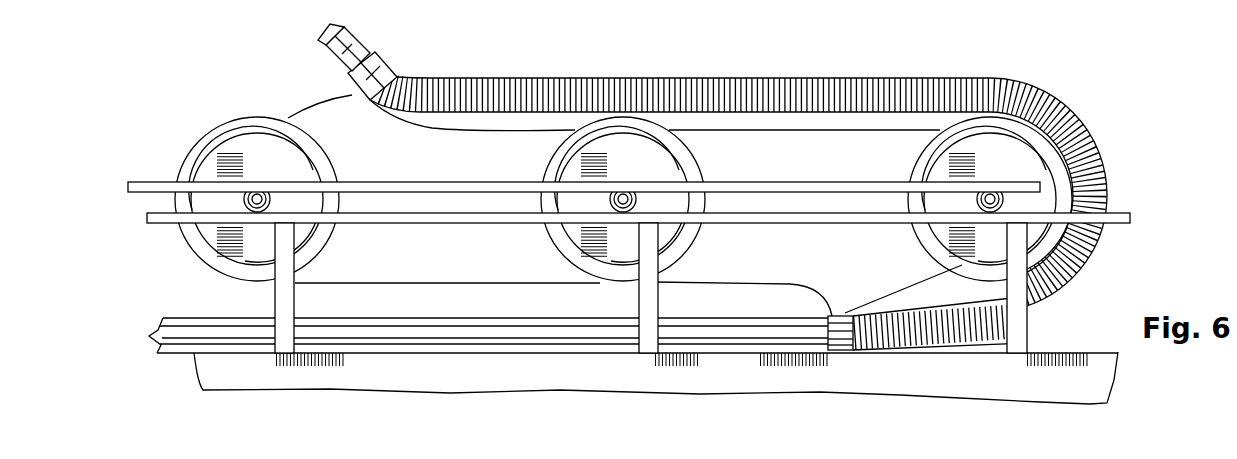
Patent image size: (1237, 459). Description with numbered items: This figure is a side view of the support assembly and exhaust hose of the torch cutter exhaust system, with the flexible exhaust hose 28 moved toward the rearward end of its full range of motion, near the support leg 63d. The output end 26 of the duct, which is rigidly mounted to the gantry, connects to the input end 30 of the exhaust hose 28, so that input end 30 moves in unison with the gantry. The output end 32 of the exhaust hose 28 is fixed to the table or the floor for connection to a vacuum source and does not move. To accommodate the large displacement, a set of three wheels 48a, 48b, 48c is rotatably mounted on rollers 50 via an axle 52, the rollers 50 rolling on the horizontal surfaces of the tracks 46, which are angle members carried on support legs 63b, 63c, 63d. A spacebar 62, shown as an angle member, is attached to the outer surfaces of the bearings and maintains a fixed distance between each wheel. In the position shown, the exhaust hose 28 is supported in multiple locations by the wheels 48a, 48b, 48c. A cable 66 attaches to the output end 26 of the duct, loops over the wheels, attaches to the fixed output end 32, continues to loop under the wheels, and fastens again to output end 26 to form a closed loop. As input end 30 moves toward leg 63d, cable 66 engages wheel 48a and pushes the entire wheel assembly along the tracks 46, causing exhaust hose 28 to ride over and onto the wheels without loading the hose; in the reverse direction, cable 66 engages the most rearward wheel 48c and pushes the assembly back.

The output end of duct 26 is at (334, 60).
The flexible exhaust hose 28 is at (1084, 112).
The input end of exhaust hose 30 is at (392, 66).
The output end of exhaust hose 32 is at (840, 342).
The tracks 46 is at (165, 223).
The wheel 48a is at (1063, 172).
The wheel 48b is at (693, 166).
The wheel 48c is at (213, 138).
The rollers 50 is at (594, 198).
The axle 52 is at (975, 195).
The spacebar 62 is at (153, 181).
The support leg 63b is at (1027, 338).
The support leg 63c is at (655, 305).
The support leg 63d is at (290, 305).
The cable 66 is at (298, 110).